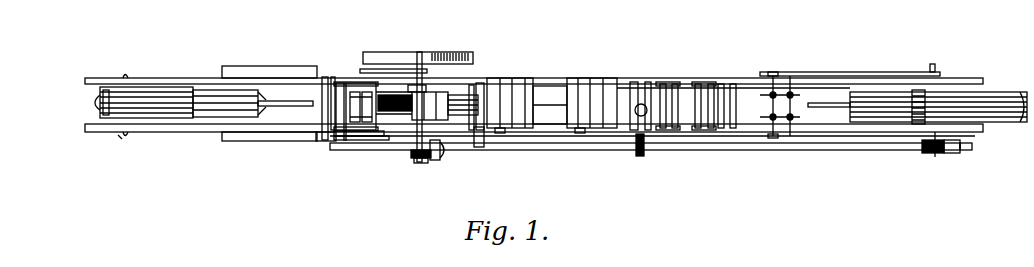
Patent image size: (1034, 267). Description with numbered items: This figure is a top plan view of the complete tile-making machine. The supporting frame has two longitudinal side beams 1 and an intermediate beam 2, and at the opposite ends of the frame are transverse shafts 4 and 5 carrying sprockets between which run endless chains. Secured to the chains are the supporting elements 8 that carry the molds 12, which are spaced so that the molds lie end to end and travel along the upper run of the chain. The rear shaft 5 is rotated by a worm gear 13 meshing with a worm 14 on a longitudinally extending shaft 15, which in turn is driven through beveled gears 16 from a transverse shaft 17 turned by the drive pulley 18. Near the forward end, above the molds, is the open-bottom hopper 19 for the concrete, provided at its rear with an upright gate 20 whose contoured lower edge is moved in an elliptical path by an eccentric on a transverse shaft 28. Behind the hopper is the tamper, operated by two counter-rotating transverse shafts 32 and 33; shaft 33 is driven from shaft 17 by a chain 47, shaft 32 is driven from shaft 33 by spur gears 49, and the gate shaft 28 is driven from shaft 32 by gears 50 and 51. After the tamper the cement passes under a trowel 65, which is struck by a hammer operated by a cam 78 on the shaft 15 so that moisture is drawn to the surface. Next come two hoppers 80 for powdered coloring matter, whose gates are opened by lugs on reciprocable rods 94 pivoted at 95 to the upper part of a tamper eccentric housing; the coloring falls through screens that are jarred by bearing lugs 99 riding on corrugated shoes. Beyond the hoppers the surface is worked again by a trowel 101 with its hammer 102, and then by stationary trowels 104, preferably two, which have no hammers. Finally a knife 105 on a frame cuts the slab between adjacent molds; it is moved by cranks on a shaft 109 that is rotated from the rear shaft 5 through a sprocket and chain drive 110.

The longitudinal side beams 1 is at (174, 78).
The intermediate beam 2 is at (820, 107).
The transverse shaft 4 is at (124, 136).
The rear shaft 5 is at (962, 135).
The supporting elements 8 is at (97, 105).
The molds 12 is at (207, 117).
The worm gear 13 is at (946, 154).
The worm 14 is at (928, 154).
The longitudinally extending shaft 15 is at (762, 151).
The beveled gears 16 is at (436, 160).
The transverse shaft 17 is at (412, 156).
The drive pulley 18 is at (475, 56).
The hopper 19 is at (281, 66).
The gate 20 is at (320, 100).
The transverse shaft 28 is at (325, 141).
The transverse shaft 32 is at (355, 141).
The transverse shaft 33 is at (362, 136).
The chain 47 is at (385, 68).
The spur gears 49 is at (358, 132).
The gear 50 is at (344, 141).
The gear 51 is at (322, 141).
The trowel 65 is at (477, 90).
The cam 78 is at (478, 148).
The hoppers 80 is at (522, 82).
The reciprocable rods 94 is at (470, 131).
The pivot 95 is at (550, 105).
The bearing lugs 99 is at (443, 107).
The trowel 101 is at (640, 82).
The hammer 102 is at (637, 122).
The stationary trowels 104 is at (668, 84).
The knife 105 is at (729, 92).
The shaft 109 is at (773, 76).
The sprocket and chain drive 110 is at (850, 72).